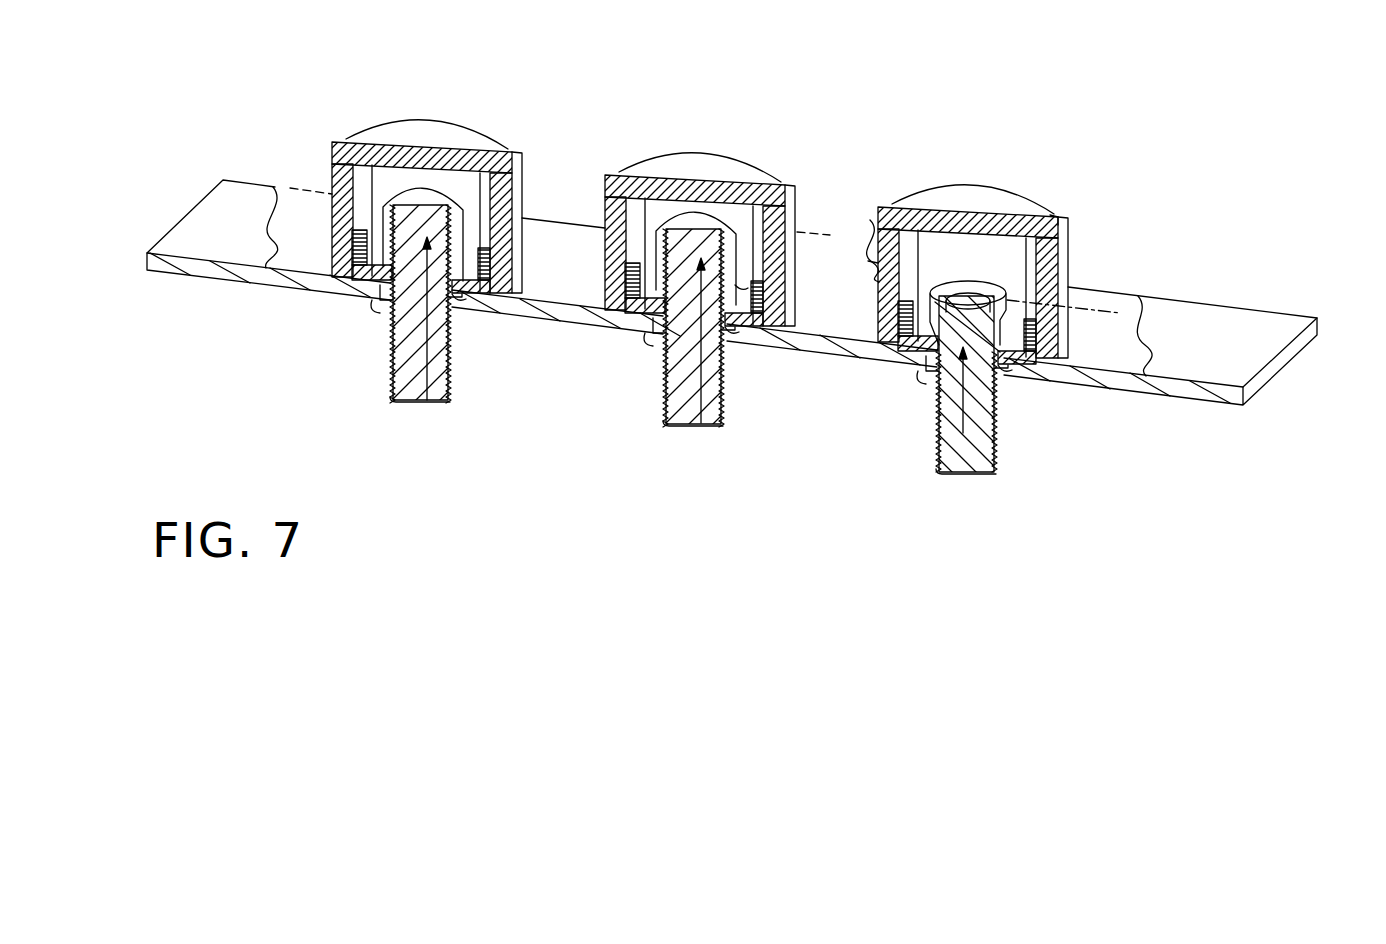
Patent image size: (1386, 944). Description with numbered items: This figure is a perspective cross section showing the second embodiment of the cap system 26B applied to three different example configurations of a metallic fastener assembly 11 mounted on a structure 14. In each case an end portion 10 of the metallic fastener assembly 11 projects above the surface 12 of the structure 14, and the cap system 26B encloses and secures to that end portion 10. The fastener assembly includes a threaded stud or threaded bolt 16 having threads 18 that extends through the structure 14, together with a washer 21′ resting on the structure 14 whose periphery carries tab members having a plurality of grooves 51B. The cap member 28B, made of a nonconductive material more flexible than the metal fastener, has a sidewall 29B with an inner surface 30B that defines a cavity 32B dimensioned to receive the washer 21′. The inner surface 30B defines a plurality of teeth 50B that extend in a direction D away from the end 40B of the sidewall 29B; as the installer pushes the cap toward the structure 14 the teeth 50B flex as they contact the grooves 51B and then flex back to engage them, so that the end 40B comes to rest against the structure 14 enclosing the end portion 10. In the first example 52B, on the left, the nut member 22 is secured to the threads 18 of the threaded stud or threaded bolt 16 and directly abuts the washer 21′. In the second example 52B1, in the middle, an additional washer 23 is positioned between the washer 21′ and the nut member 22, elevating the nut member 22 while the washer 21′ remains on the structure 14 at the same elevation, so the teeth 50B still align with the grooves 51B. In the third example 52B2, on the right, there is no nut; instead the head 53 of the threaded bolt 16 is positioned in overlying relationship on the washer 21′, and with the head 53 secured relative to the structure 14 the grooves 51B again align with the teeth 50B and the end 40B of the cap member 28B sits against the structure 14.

The end portion 10 is at (736, 292).
The metallic fastener assembly 11 is at (693, 360).
The surface 12 is at (1225, 325).
The structure 14 is at (1270, 370).
The threaded stud or threaded bolt 16 is at (438, 402).
The threads 18 is at (455, 383).
The washer 21′ is at (462, 295).
The nut member 22 is at (462, 248).
The washer 23 is at (735, 290).
The cap system 26B is at (695, 196).
The cap member 28B is at (400, 130).
The sidewall 29B is at (340, 172).
The inner surface 30B is at (382, 183).
The cavity 32B is at (440, 178).
The end 40B is at (380, 283).
The plurality of teeth 50B is at (488, 258).
The plurality of grooves 51B is at (388, 297).
The first example 52B is at (376, 310).
The second example 52B1 is at (648, 340).
The third example 52B2 is at (923, 374).
The head 53 is at (1056, 222).
The direction D is at (677, 335).